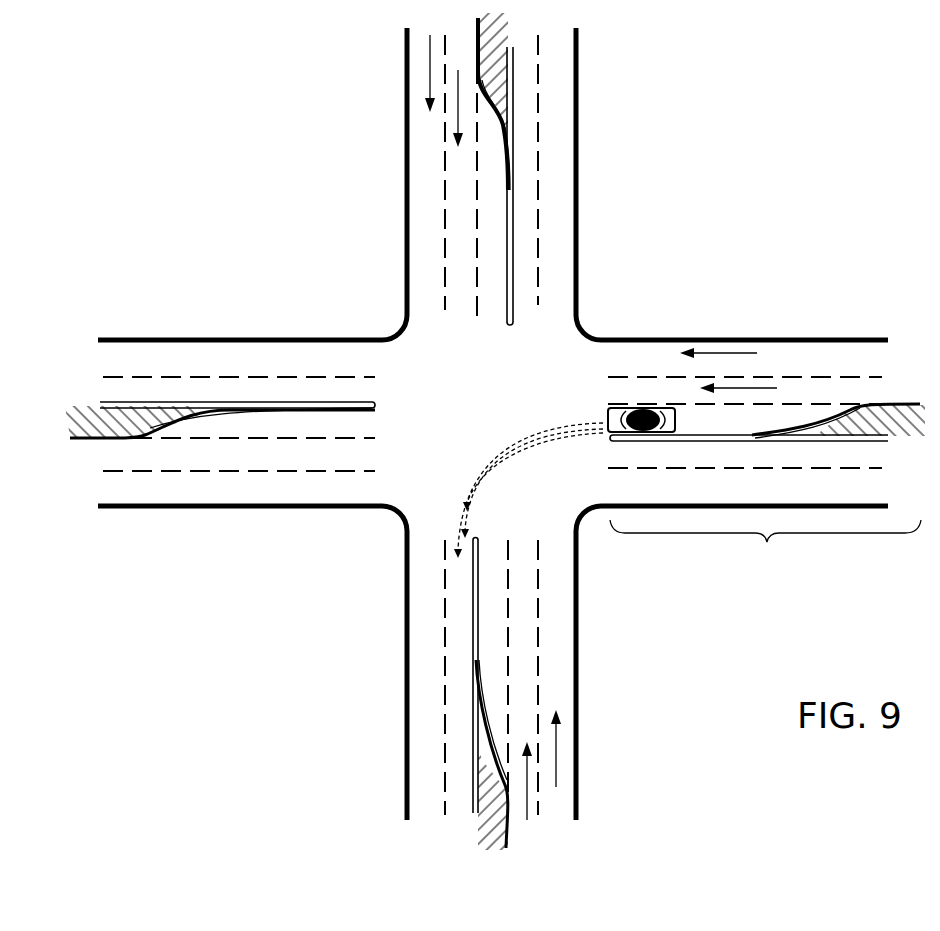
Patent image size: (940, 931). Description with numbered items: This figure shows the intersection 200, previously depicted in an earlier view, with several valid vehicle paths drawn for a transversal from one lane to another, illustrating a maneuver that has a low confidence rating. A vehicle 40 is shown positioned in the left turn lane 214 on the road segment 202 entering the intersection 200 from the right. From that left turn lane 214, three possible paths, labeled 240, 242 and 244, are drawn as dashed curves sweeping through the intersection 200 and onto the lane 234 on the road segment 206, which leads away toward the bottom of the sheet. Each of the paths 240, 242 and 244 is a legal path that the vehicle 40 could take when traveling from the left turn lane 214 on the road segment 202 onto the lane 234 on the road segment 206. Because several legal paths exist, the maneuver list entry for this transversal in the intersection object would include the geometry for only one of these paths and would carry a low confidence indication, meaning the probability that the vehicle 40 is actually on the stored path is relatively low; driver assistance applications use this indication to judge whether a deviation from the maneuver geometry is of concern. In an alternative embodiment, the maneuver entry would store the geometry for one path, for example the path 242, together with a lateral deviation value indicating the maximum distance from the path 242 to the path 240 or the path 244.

The intersection 200 is at (244, 212).
The vehicle 40 is at (650, 388).
The left turn lane 214 is at (799, 420).
The road segment 202 is at (765, 557).
The road segment 206 is at (377, 773).
The lane 234 is at (457, 590).
The path 240 is at (455, 472).
The path 242 is at (497, 462).
The path 244 is at (553, 452).